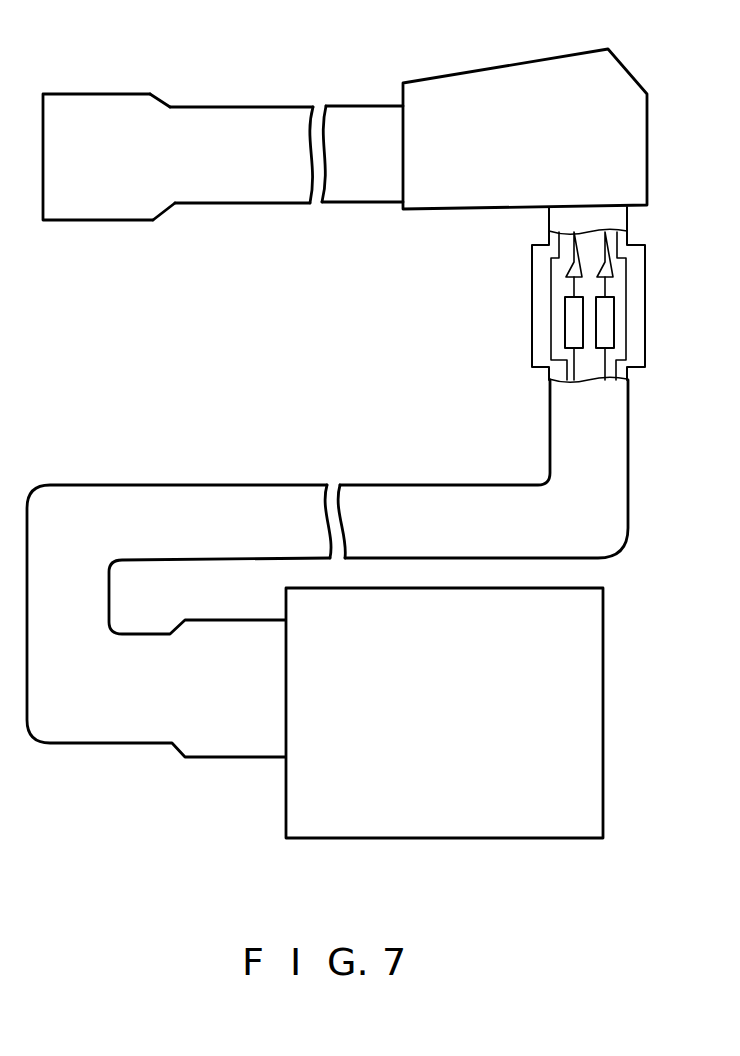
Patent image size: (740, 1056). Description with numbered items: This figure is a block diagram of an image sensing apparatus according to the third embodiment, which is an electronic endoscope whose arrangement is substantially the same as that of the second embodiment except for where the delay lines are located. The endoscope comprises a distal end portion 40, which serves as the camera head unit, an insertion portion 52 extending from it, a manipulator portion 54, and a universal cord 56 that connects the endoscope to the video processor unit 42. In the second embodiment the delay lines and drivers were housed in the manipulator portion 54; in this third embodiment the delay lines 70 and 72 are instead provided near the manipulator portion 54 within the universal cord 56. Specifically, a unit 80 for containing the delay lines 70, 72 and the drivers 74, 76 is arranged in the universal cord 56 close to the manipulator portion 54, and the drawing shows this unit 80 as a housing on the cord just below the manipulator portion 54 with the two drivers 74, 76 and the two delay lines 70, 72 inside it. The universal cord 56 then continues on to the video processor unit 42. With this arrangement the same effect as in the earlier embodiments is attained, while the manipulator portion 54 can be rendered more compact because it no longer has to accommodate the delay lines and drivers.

The distal end portion 40 is at (88, 94).
The insertion portion 52 is at (207, 107).
The manipulator portion 54 is at (513, 63).
The universal cord 56 is at (200, 485).
The video processor unit 42 is at (286, 808).
The unit 80 is at (543, 320).
The delay line 70 is at (565, 337).
The delay line 72 is at (614, 320).
The driver 74 is at (567, 272).
The driver 76 is at (613, 268).